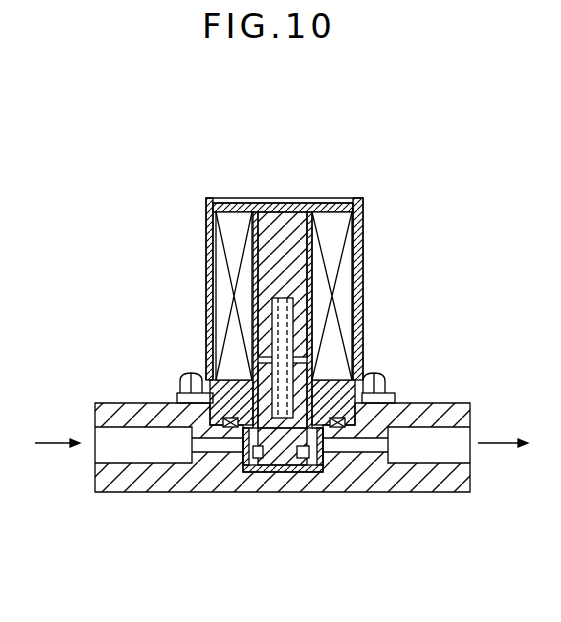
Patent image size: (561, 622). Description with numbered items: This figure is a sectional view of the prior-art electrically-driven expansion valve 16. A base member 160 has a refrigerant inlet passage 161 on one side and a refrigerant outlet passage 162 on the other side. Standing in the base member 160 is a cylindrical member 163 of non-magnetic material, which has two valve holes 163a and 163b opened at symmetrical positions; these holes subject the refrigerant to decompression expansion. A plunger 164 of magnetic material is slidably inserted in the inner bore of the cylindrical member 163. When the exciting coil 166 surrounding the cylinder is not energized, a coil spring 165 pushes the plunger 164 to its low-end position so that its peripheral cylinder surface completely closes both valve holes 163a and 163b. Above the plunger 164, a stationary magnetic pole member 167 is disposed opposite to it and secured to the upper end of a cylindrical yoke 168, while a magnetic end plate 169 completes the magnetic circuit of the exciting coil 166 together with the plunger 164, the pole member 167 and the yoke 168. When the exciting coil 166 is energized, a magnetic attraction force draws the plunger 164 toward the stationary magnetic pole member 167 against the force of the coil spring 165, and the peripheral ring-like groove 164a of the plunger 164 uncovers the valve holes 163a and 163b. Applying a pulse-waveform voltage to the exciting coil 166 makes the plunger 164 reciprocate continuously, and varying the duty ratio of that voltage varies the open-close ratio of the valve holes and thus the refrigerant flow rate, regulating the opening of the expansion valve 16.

The electrically-driven expansion valve 16 is at (203, 319).
The base member 160 is at (128, 413).
The refrigerant inlet passage 161 is at (143, 452).
The refrigerant outlet passage 162 is at (428, 453).
The cylindrical member 163 is at (312, 228).
The valve hole 163a is at (227, 467).
The valve hole 163b is at (340, 470).
The plunger 164 is at (270, 453).
The peripheral ring-like groove 164a is at (298, 455).
The coil spring 165 is at (287, 313).
The exciting coil 166 is at (345, 273).
The stationary magnetic pole member 167 is at (295, 230).
The cylindrical yoke 168 is at (207, 222).
The magnetic end plate 169 is at (340, 388).